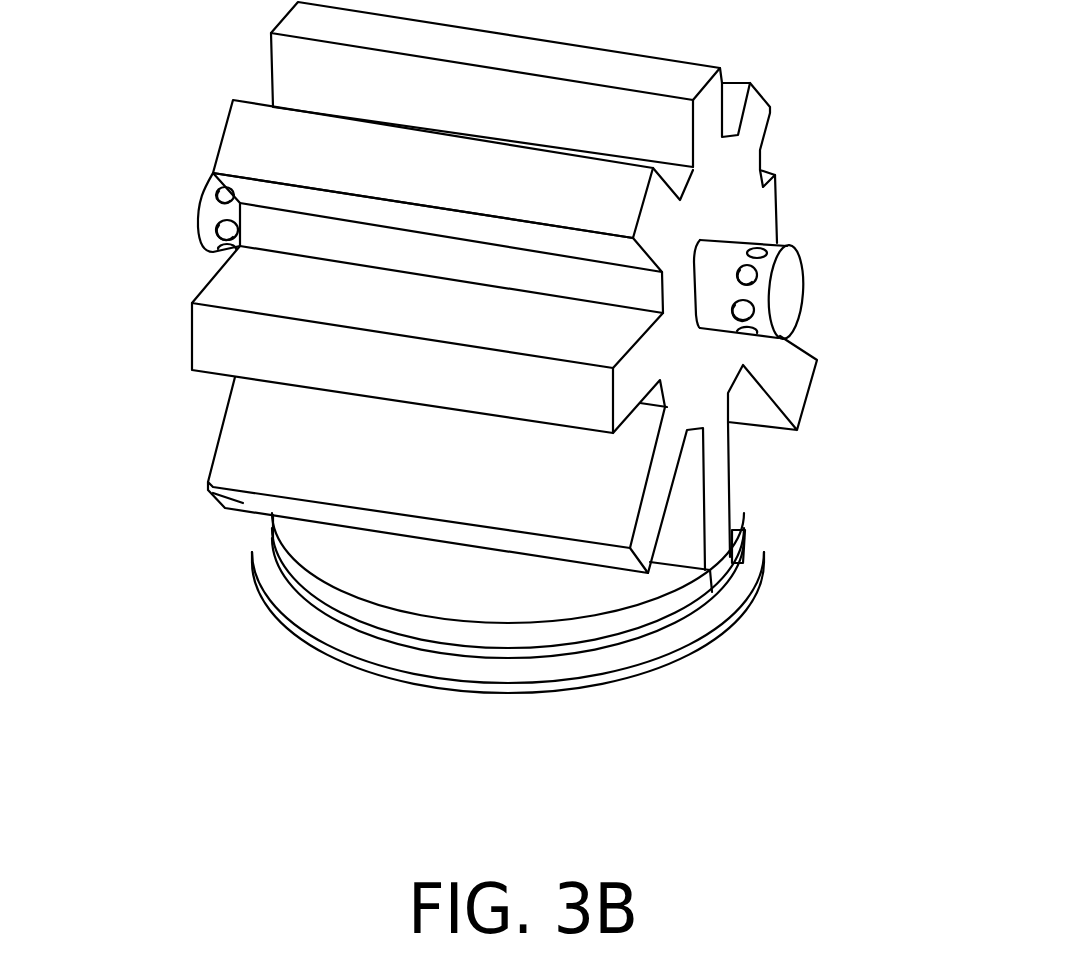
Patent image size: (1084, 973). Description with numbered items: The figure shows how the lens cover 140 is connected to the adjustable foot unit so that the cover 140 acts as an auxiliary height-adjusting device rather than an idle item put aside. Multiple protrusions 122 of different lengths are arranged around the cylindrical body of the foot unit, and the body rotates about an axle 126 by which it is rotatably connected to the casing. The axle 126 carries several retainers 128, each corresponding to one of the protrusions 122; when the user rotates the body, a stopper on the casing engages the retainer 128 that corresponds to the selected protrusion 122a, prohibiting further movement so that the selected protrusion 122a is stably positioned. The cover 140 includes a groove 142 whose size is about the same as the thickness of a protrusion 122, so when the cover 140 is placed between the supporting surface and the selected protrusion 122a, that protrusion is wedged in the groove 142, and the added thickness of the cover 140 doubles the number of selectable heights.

The protrusions 122 is at (212, 489).
The selected protrusion 122a is at (717, 490).
The axle 126 is at (213, 208).
The retainers 128 is at (757, 273).
The cover 140 is at (632, 667).
The groove 142 is at (743, 565).